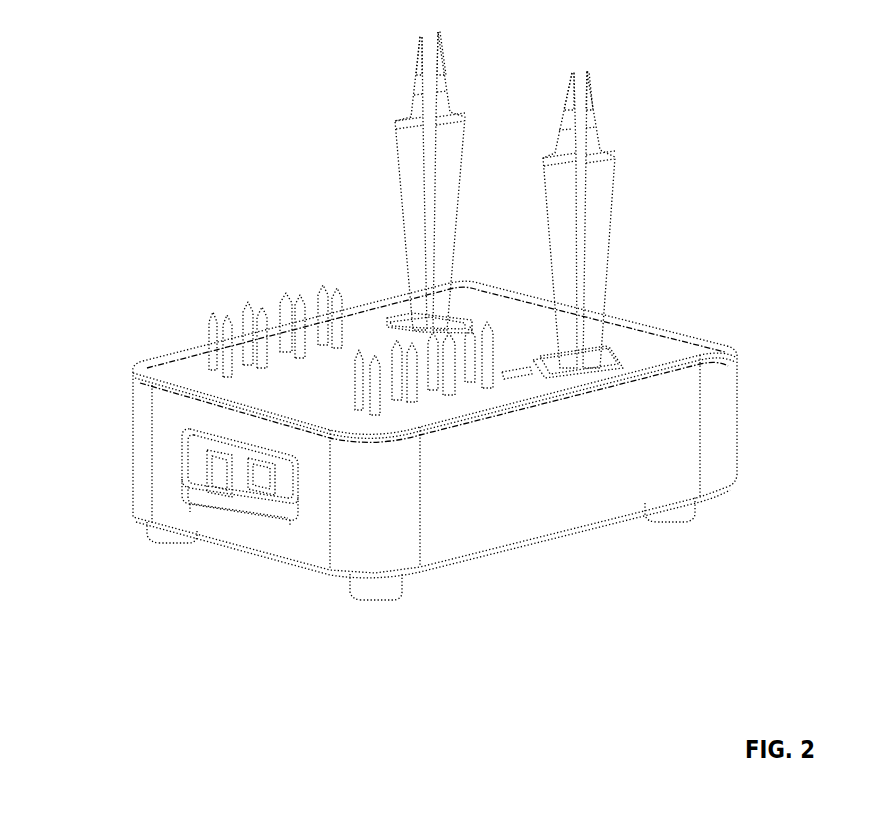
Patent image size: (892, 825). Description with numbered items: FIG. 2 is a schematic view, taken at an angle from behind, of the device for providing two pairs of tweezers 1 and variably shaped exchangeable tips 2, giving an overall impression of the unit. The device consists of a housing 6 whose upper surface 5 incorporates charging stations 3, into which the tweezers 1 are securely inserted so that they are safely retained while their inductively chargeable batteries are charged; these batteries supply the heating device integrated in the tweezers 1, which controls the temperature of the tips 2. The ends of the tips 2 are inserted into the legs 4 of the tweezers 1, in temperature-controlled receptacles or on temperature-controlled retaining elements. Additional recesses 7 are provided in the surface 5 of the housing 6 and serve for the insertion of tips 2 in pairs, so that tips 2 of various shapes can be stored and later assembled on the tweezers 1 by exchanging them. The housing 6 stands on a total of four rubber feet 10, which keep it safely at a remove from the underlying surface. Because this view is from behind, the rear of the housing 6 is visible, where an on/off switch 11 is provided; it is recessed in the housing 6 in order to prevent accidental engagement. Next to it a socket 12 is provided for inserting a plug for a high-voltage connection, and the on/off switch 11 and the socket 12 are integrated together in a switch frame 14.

The tweezers 1 is at (397, 143).
The tips 2 is at (442, 53).
The charging station 3 is at (404, 320).
The legs 4 is at (410, 253).
The surface 5 is at (633, 348).
The housing 6 is at (387, 496).
The recesses 7 is at (362, 335).
The rubber feet 10 is at (160, 543).
The on/off switch 11 is at (283, 487).
The socket 12 is at (215, 475).
The switch frame 14 is at (237, 513).